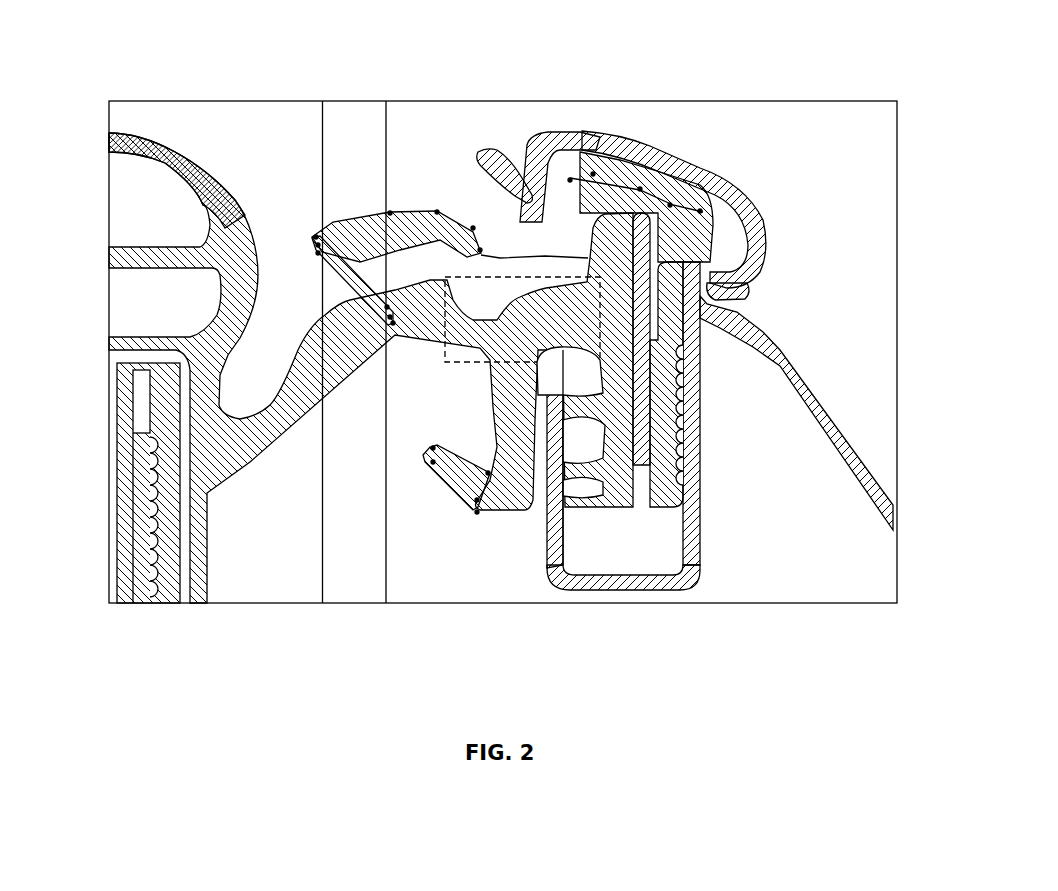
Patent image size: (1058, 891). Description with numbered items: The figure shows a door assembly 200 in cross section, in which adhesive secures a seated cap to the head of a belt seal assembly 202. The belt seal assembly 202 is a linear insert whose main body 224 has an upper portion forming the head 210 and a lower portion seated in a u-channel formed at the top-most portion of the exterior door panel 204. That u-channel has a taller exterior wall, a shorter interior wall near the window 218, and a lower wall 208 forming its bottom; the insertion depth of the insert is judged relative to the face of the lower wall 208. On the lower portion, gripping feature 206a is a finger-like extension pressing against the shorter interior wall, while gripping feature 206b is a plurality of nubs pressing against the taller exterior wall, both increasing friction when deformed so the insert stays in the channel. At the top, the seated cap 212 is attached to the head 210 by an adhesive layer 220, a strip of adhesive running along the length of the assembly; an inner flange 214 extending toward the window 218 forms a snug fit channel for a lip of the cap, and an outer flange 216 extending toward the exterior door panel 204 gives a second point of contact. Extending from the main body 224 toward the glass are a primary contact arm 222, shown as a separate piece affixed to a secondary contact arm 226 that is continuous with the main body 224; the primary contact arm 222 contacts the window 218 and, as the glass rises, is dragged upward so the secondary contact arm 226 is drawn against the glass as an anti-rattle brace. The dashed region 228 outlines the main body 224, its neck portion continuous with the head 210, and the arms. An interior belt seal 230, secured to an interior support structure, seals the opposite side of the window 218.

The door assembly 200 is at (137, 50).
The belt seal assembly 202 is at (478, 235).
The exterior door panel 204 is at (840, 420).
The gripping feature 206a is at (553, 500).
The gripping feature 206b is at (688, 443).
The lower wall 208 is at (633, 587).
The head 210 is at (578, 175).
The seated cap 212 is at (678, 165).
The inner flange 214 is at (515, 152).
The outer flange 216 is at (745, 297).
The window 218 is at (365, 122).
The adhesive layer 220 is at (594, 173).
The primary contact arm 222 is at (345, 243).
The main body 224 is at (590, 323).
The secondary contact arm 226 is at (508, 507).
The region 228 is at (495, 365).
The interior belt seal 230 is at (250, 463).